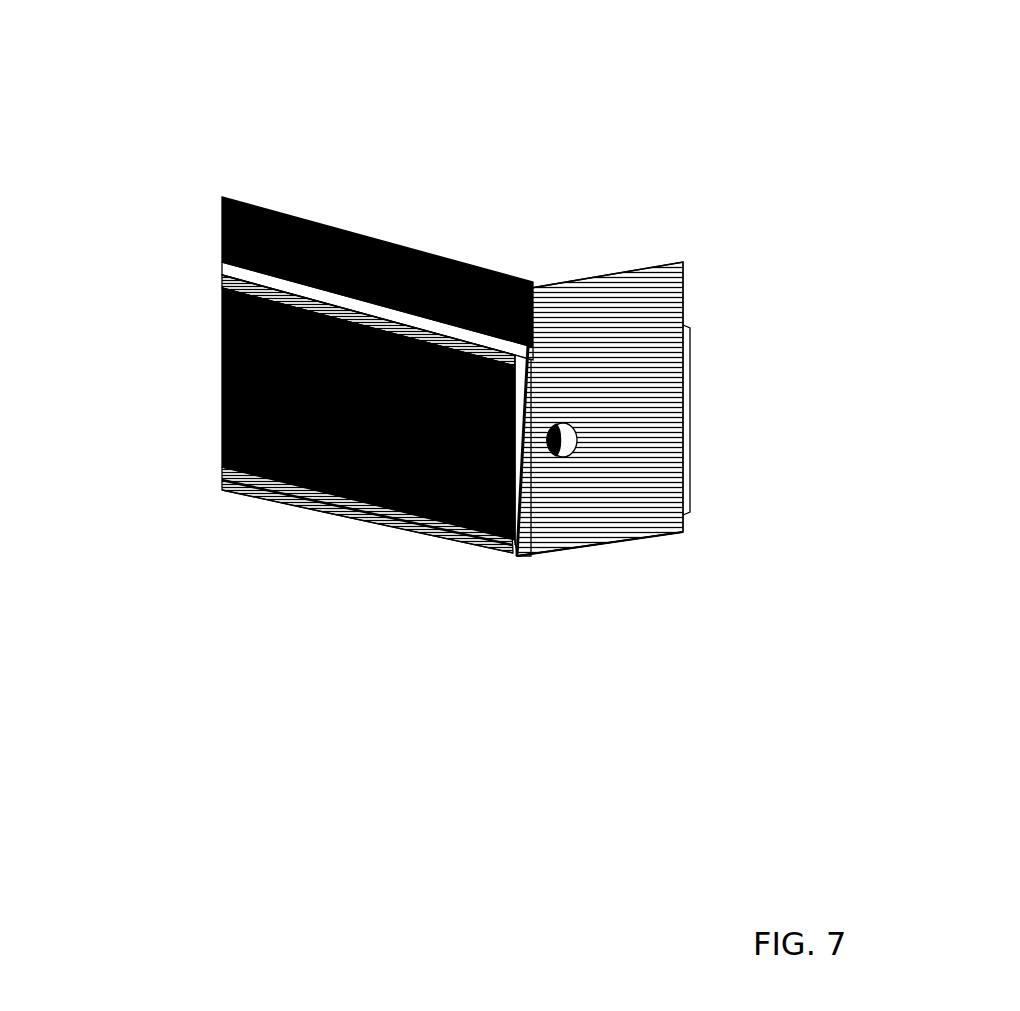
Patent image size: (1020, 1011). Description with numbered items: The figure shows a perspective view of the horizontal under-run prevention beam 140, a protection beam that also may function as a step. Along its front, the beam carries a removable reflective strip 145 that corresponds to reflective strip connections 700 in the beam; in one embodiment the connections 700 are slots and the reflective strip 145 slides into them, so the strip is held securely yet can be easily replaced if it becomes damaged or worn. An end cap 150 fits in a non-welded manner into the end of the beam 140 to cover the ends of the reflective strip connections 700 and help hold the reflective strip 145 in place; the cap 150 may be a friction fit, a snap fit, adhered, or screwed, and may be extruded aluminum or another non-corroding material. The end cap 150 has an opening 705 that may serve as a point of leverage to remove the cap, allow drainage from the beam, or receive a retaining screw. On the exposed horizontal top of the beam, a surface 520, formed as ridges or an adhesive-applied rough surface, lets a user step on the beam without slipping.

The horizontal under-run prevention beam 140 is at (370, 330).
The reflective strip 145 is at (225, 442).
The end cap 150 is at (523, 387).
The surface 520 is at (303, 243).
The reflective strip connections 700 is at (233, 276).
The opening 705 is at (560, 447).